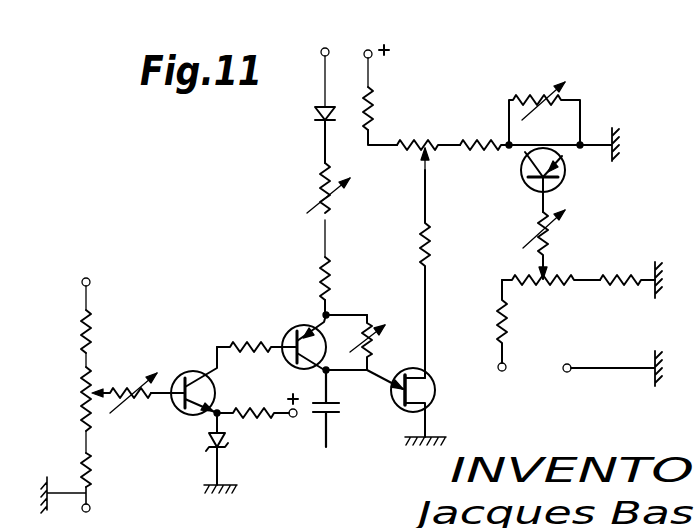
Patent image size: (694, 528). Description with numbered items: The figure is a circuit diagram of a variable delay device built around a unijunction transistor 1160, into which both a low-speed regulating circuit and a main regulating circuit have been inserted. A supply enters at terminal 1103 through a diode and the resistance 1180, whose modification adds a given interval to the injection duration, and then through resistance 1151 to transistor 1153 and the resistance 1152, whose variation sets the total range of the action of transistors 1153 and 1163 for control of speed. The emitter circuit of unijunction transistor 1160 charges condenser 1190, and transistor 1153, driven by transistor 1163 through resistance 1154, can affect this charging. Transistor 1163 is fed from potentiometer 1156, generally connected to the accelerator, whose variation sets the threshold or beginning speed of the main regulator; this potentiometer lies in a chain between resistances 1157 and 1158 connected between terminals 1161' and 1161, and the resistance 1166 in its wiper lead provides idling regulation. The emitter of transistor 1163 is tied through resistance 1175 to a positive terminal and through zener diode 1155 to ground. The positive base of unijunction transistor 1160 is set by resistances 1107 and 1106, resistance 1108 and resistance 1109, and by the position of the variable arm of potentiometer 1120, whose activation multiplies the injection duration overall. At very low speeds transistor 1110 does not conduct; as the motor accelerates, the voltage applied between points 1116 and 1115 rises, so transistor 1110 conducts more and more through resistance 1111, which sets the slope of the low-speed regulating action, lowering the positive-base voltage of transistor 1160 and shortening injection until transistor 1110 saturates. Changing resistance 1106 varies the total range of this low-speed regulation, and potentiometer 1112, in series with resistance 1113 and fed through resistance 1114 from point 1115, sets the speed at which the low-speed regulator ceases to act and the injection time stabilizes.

The input terminal 1103 is at (325, 62).
The resistance 1180 is at (323, 190).
The resistor 1151 is at (320, 268).
The resistance 1152 is at (372, 322).
The transistor 1153 is at (309, 324).
The resistor 1154 is at (248, 342).
The transistor 1163 is at (219, 394).
The resistor with supply terminal 1175 is at (257, 418).
The zener diode 1155 is at (207, 444).
The resistance 1166 is at (143, 380).
The terminal 1161' is at (111, 286).
The resistor 1157 is at (80, 323).
The potentiometer 1156 is at (80, 392).
The resistor 1158 is at (80, 470).
The terminal 1161 is at (109, 516).
The resistance 1107 is at (373, 102).
The potentiometer 1120 is at (426, 131).
The resistor 1108 is at (486, 131).
The resistor 1109 is at (431, 258).
The resistance 1106 is at (542, 98).
The transistor 1110 is at (565, 174).
The resistance 1111 is at (559, 234).
The potentiometer 1112 is at (551, 297).
The resistor 1113 is at (627, 297).
The resistor 1114 is at (510, 333).
The point 1115 is at (505, 370).
The point 1116 is at (569, 372).
The unijunction transistor 1160 is at (437, 400).
The condenser 1190 is at (340, 414).